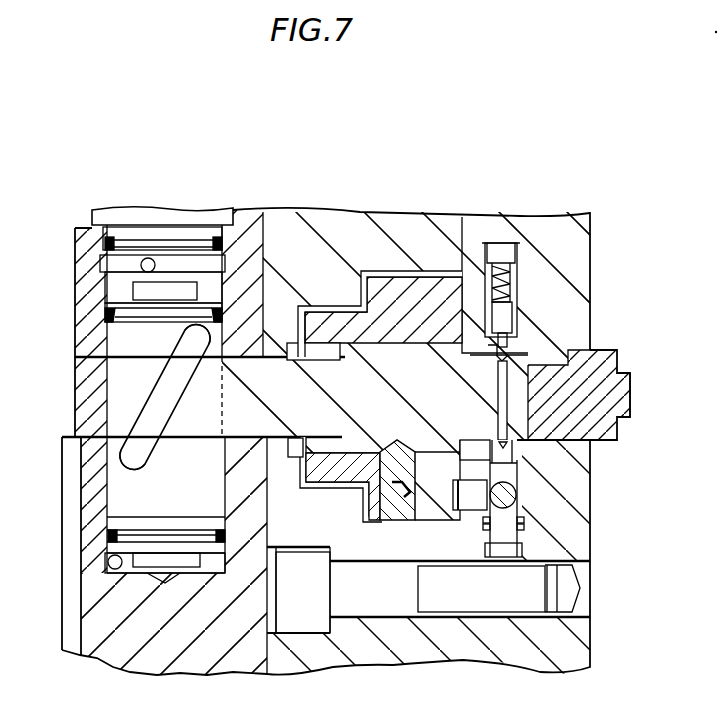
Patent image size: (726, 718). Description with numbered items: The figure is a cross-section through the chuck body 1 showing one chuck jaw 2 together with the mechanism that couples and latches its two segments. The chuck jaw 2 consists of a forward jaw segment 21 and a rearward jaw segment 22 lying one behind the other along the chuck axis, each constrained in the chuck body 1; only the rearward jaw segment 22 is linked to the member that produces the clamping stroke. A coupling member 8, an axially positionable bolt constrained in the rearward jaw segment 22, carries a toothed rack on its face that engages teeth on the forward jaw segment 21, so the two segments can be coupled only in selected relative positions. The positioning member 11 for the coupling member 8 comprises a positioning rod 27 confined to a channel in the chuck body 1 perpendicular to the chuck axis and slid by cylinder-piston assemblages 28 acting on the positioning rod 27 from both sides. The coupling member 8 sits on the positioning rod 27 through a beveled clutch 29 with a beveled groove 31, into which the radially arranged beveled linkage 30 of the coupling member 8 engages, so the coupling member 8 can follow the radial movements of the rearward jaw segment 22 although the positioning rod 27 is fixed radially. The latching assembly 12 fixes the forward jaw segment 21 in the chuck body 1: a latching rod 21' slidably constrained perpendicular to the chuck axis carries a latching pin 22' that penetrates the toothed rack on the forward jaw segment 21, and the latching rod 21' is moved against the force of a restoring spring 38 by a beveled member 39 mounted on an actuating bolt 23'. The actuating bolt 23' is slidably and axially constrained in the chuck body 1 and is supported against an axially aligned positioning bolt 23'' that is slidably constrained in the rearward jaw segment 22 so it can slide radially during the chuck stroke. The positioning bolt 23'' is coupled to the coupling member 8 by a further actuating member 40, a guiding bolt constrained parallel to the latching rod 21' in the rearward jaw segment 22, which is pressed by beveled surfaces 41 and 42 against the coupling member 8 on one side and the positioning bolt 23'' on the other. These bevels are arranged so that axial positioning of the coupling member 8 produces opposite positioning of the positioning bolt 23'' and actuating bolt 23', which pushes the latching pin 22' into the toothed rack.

The chuck body 1 is at (358, 234).
The chuck jaw 2 is at (634, 394).
The coupling member 8 is at (350, 415).
The positioning member 11 is at (122, 357).
The latching assembly 12 is at (521, 480).
The forward jaw segment 21 is at (637, 414).
The latching rod 21' is at (526, 508).
The rearward jaw segment 22 is at (374, 389).
The latching pin 22' is at (514, 458).
The actuating bolt 23' is at (462, 518).
The positioning bolt 23'' is at (409, 515).
The positioning rod 27 is at (117, 500).
The cylinder-piston assemblages 28 is at (101, 320).
The beveled clutch 29 is at (171, 396).
The beveled linkage 30 is at (187, 370).
The beveled groove 31 is at (145, 450).
The restoring spring 38 is at (523, 550).
The beveled member 39 is at (505, 492).
The actuating member 40 is at (356, 493).
The beveled surface 41 is at (411, 442).
The beveled surface 42 is at (440, 490).